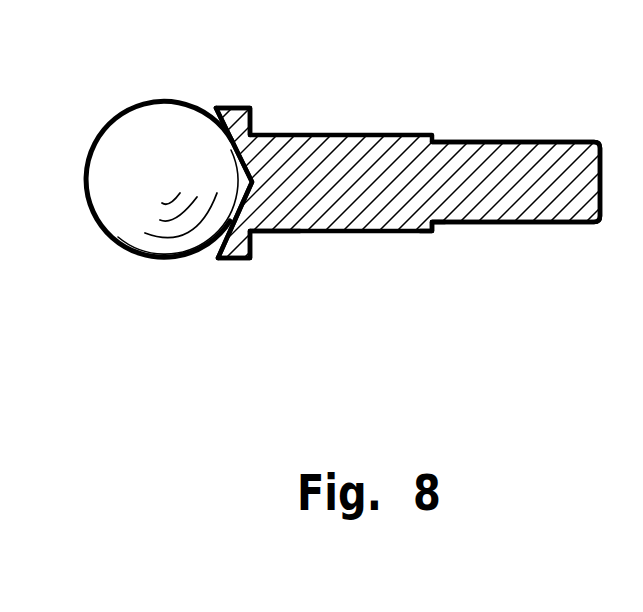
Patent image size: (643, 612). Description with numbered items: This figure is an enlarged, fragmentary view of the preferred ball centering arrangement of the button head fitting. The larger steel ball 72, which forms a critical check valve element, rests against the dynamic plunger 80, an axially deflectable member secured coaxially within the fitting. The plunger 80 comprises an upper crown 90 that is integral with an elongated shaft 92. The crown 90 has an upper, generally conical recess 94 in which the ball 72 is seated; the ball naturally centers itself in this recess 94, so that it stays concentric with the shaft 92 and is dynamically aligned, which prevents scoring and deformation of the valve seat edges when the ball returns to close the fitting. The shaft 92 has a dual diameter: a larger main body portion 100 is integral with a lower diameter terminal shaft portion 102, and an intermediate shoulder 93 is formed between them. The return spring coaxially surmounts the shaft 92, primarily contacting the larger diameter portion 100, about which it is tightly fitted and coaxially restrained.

The steel ball 72 is at (158, 250).
The dynamic plunger 80 is at (409, 259).
The upper crown 90 is at (232, 112).
The elongated shaft 92 is at (423, 102).
The intermediate shoulder 93 is at (433, 231).
The conical recess 94 is at (217, 110).
The main body portion 100 is at (293, 232).
The terminal shaft portion 102 is at (492, 208).